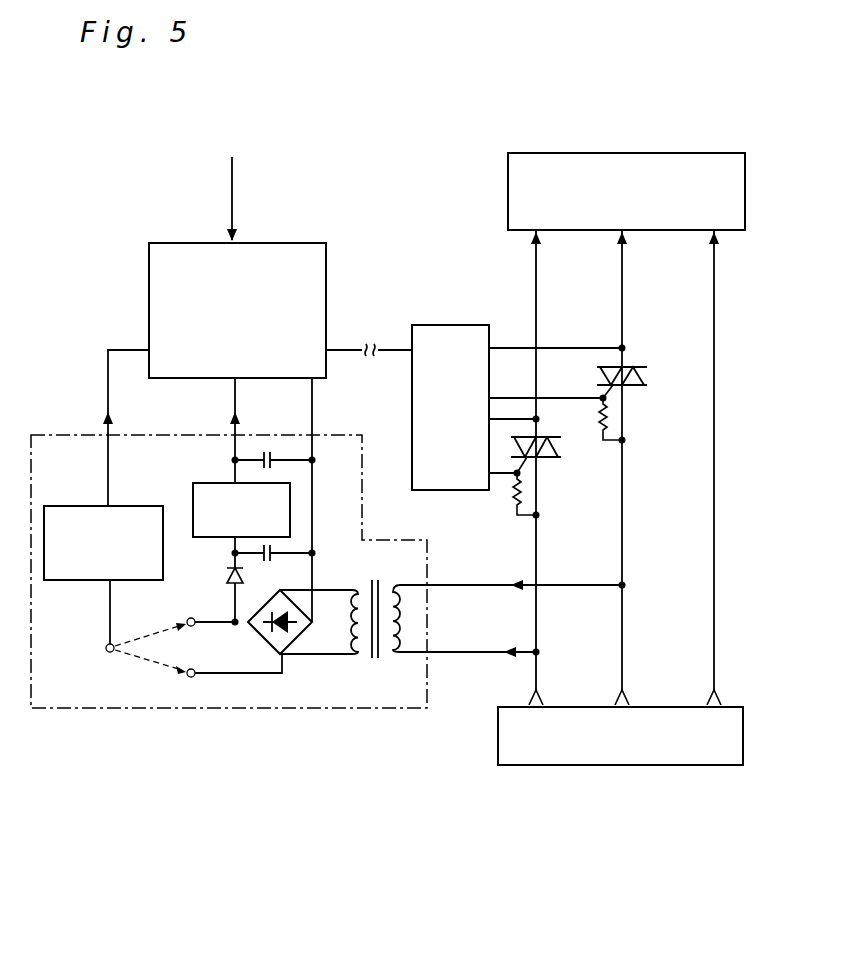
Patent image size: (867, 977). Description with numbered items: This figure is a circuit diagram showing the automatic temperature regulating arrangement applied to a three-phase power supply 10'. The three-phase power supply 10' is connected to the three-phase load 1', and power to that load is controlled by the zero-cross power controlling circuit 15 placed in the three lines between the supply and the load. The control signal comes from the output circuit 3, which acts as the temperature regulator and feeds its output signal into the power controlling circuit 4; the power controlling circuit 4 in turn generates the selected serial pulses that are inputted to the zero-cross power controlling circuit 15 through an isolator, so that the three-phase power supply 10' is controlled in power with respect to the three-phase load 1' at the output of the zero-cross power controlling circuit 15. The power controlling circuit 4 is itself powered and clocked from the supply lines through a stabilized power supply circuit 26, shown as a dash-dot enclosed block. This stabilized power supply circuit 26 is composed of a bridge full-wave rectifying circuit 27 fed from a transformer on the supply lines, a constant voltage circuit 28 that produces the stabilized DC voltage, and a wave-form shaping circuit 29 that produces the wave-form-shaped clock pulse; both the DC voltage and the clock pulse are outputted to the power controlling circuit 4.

The output circuit 3 is at (264, 183).
The power controlling circuit 4 is at (303, 267).
The zero-cross power controlling circuit 15 is at (457, 333).
The three-phase load 1' is at (626, 148).
The constant voltage circuit 28 is at (212, 483).
The wave-form shaping circuit 29 is at (82, 581).
The stabilized power supply circuit 26 is at (118, 708).
The bridge full-wave rectifying circuit 27 is at (279, 640).
The three-phase power supply 10' is at (620, 779).